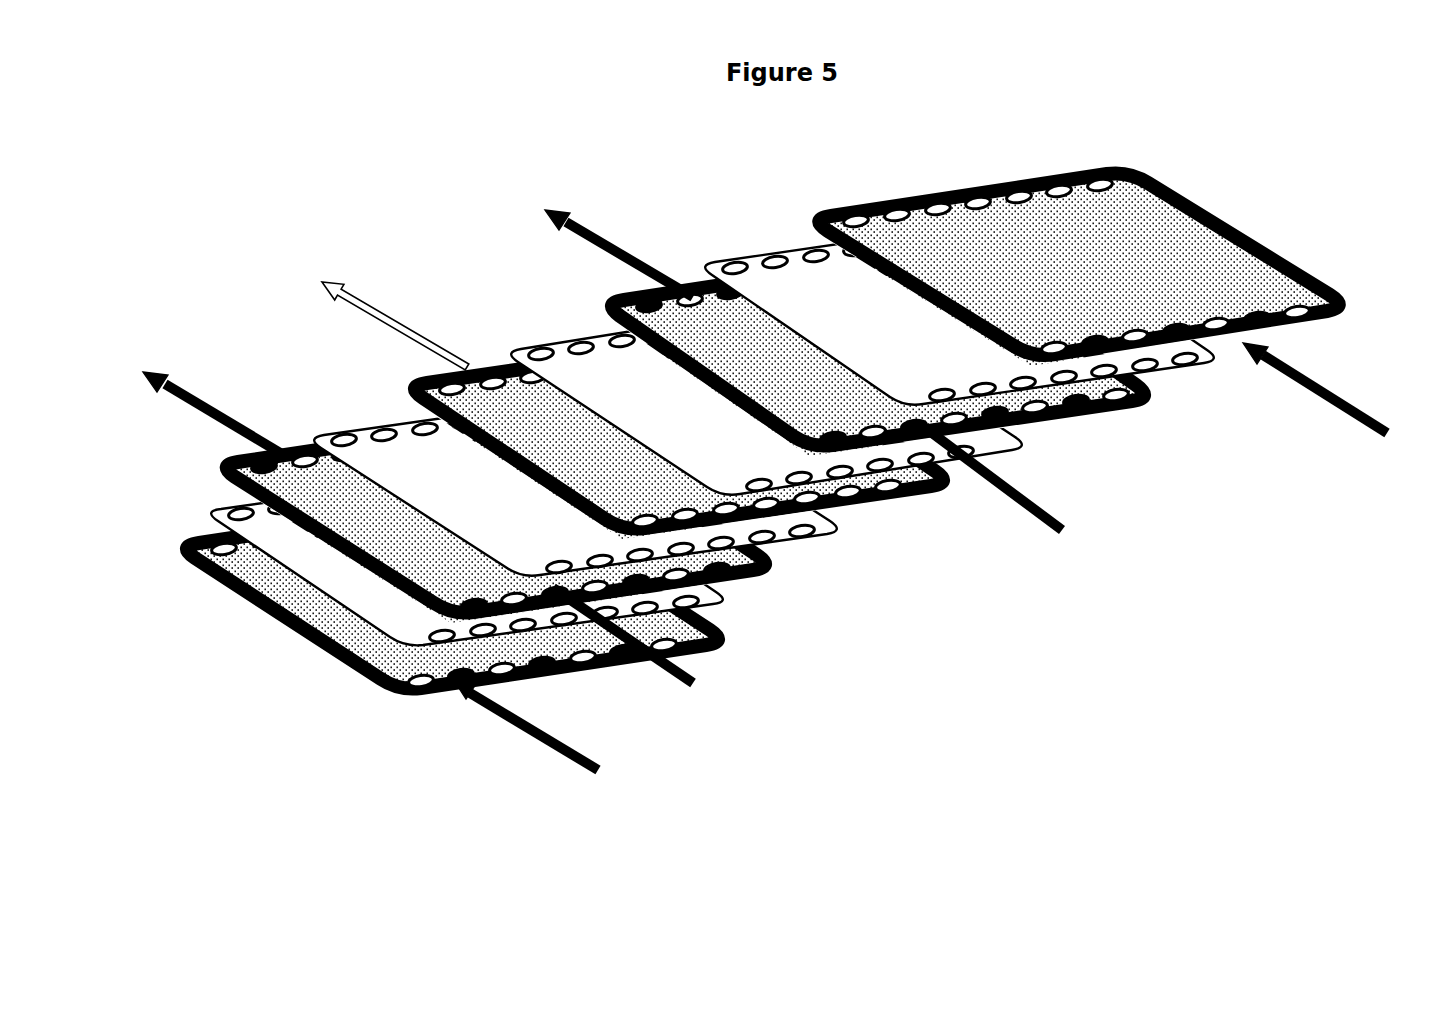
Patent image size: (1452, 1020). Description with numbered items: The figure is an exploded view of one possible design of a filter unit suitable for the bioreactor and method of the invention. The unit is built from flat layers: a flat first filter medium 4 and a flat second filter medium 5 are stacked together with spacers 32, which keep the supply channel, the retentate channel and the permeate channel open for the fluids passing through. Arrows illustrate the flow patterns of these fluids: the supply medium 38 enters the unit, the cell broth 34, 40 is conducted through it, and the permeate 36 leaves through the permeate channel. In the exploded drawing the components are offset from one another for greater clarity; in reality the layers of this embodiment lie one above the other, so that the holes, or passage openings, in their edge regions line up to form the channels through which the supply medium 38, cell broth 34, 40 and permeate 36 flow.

The spacer 32 is at (1067, 231).
The first filter medium 4 is at (913, 348).
The second filter medium 5 is at (764, 462).
The cell broth 34 is at (418, 328).
The permeate 36 is at (389, 302).
The supply medium 38 is at (942, 579).
The cell broth 40 is at (832, 575).